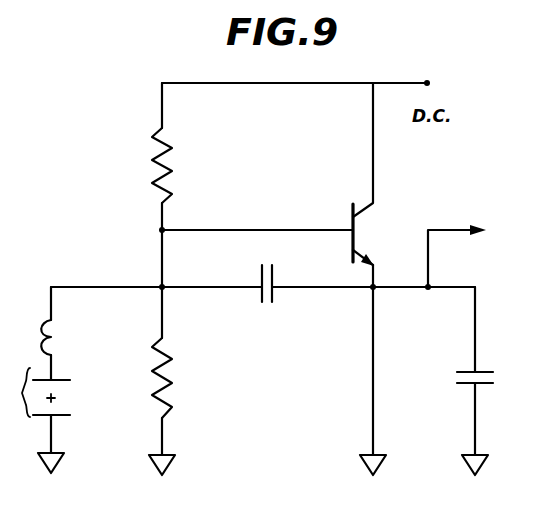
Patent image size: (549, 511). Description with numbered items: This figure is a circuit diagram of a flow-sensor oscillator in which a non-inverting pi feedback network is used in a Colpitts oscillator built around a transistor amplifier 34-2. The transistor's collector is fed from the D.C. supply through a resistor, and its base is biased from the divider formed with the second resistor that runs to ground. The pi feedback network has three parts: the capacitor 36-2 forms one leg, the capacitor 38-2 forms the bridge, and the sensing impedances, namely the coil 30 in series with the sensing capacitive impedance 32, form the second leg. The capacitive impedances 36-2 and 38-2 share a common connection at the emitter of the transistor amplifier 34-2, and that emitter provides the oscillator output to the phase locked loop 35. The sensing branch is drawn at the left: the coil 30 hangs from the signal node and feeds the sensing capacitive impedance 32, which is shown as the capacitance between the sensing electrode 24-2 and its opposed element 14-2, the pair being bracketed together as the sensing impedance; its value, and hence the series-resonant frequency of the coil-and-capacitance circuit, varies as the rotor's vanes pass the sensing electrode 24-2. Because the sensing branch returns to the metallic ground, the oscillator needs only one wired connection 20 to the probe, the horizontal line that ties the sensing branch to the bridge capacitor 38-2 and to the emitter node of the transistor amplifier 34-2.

The wired connection 20 is at (103, 285).
The coil 30 is at (58, 343).
The electrode 24-2 is at (68, 380).
The piezoelectric element 14-2 is at (58, 398).
The sensing capacitive impedance 32 is at (20, 395).
The transistor amplifier 34-2 is at (353, 221).
The capacitor 38-2 is at (262, 303).
The capacitor 36-2 is at (449, 380).
The phase locked loop 35 is at (473, 253).